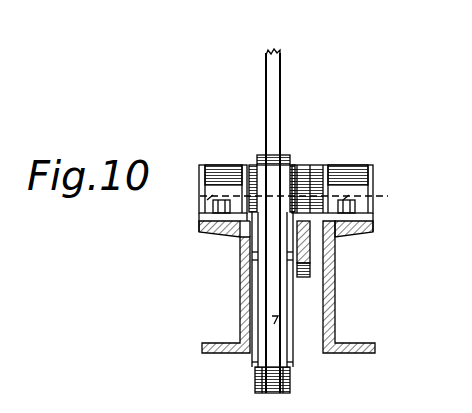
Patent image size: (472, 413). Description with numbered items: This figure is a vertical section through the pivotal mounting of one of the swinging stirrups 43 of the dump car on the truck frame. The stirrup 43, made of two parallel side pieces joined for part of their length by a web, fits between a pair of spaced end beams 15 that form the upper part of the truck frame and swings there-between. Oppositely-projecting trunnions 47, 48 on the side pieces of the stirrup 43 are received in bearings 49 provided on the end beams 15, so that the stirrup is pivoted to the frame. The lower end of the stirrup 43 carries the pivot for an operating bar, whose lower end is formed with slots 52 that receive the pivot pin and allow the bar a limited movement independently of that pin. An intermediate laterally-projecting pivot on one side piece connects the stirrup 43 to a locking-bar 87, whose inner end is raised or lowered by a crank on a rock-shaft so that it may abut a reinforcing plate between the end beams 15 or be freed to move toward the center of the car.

The end beams 15 is at (240, 287).
The stirrup 43 is at (290, 266).
The trunnion 47 is at (200, 196).
The trunnion 48 is at (374, 192).
The bearings 49 is at (226, 167).
The slots 52 is at (237, 221).
The locking-bar 87 is at (250, 258).